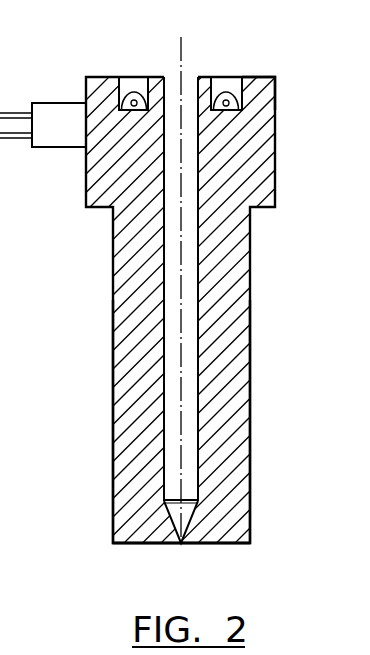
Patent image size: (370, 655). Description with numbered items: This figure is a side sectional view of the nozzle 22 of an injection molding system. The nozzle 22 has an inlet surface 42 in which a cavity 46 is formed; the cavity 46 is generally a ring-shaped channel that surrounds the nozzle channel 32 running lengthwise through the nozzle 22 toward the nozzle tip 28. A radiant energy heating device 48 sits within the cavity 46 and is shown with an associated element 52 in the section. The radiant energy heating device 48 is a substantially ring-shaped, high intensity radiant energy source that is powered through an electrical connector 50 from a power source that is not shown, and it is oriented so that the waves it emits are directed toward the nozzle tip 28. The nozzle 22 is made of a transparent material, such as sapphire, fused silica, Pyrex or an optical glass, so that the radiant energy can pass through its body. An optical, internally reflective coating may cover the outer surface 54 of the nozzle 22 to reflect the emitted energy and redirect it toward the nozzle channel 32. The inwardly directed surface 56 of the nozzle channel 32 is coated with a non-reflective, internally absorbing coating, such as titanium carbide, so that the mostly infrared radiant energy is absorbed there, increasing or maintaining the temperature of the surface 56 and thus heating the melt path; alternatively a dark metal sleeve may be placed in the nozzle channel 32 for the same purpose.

The nozzle 22 is at (238, 357).
The nozzle tip 28 is at (232, 514).
The nozzle channel 32 is at (191, 398).
The inlet surface 42 is at (261, 78).
The cavity 46 is at (232, 86).
The radiant energy heating device 48 is at (146, 88).
The electrical connector 50 is at (47, 138).
The sensor lead 52 is at (240, 110).
The outer surface 54 is at (106, 350).
The inwardly directed surface 56 is at (214, 284).